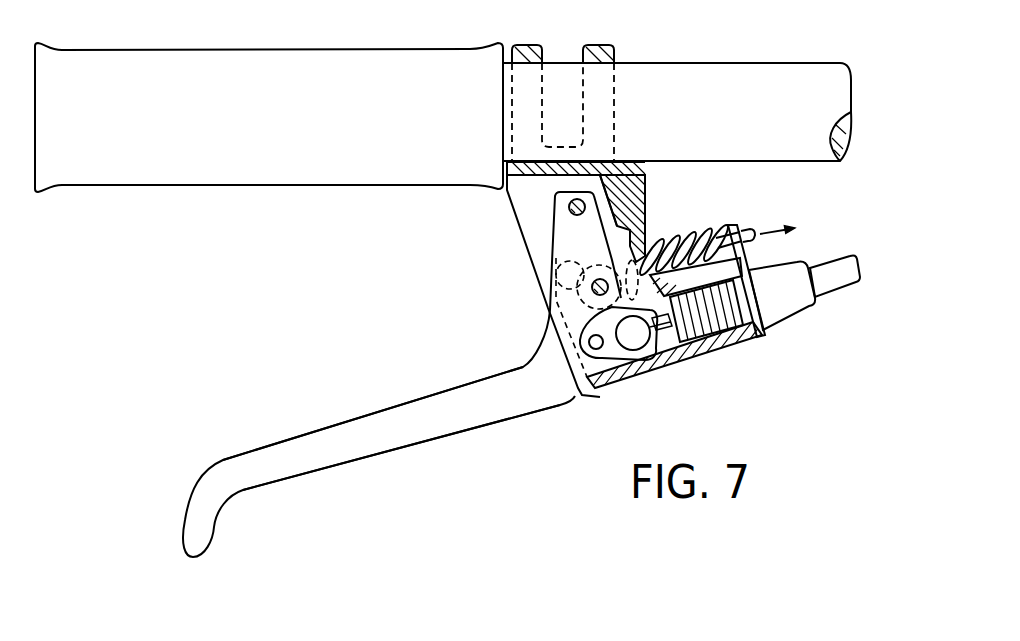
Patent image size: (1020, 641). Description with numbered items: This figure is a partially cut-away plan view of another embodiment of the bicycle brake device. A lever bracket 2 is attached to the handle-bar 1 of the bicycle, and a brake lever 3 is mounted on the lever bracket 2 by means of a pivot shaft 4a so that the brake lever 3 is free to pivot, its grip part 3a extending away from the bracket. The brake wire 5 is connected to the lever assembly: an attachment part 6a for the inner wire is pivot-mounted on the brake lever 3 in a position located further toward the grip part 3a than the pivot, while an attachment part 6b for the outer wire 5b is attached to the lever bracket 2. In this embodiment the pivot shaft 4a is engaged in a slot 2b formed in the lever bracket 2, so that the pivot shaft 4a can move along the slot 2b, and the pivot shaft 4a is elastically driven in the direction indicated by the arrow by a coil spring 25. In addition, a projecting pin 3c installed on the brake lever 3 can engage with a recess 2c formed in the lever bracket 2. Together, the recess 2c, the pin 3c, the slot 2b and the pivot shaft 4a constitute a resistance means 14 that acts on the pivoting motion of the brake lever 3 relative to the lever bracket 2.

The handle-bar 1 is at (690, 75).
The lever bracket 2 is at (522, 200).
The slot 2b is at (545, 280).
The recess 2c is at (622, 188).
The brake lever 3 is at (393, 459).
The grip part 3a is at (318, 463).
The projecting pin 3c is at (577, 200).
The pivot shaft 4a is at (593, 284).
The brake wire 5 is at (848, 285).
The outer wire 5b is at (838, 268).
The attachment part for the inner wire 6a is at (659, 367).
The attachment part for the outer wire 6b is at (780, 310).
The resistance means 14 is at (614, 213).
The coil spring 25 is at (687, 232).